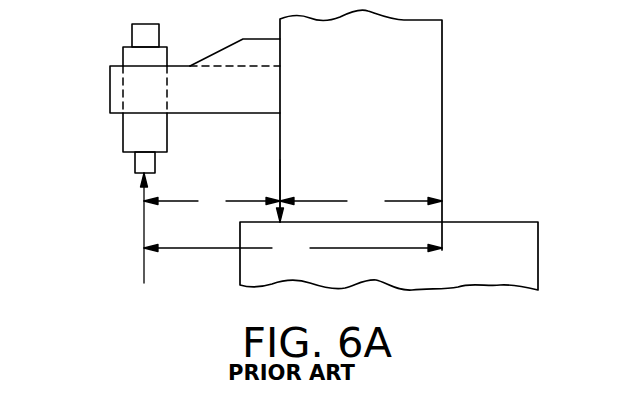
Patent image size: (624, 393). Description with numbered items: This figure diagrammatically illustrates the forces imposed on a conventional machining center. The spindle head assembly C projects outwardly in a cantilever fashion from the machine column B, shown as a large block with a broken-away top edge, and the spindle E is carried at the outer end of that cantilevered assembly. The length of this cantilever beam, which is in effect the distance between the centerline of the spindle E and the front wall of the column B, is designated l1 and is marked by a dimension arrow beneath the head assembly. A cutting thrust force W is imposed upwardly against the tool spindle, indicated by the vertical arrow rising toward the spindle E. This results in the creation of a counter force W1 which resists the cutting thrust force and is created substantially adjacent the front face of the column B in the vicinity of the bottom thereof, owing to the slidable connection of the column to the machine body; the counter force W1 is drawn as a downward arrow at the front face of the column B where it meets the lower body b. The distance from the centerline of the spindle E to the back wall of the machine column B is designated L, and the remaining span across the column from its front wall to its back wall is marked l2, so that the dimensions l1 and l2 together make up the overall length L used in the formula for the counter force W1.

The machine column B is at (428, 52).
The spindle head assembly C is at (128, 132).
The spindle E is at (137, 162).
The lower workpiece (block b) b is at (527, 250).
The cutting thrust force W is at (132, 228).
The counter force W1 is at (302, 186).
The cantilever length l1 is at (212, 200).
The length dimension l2 is at (361, 200).
The distance from spindle centerline to back wall L is at (293, 248).